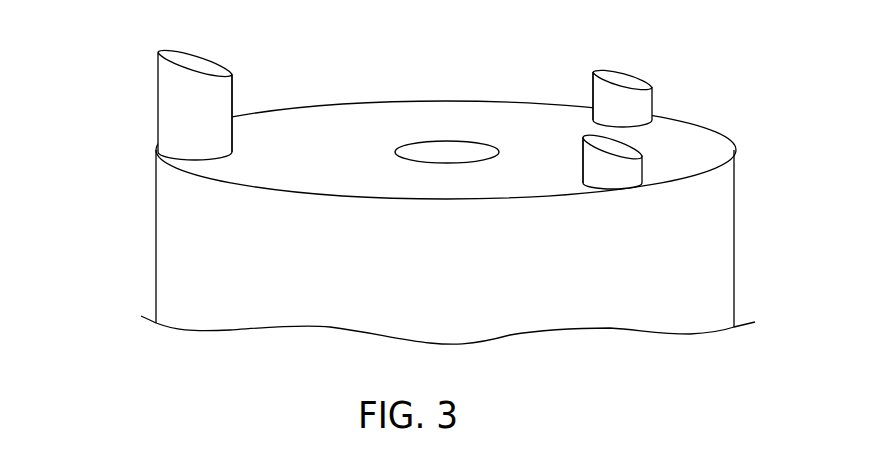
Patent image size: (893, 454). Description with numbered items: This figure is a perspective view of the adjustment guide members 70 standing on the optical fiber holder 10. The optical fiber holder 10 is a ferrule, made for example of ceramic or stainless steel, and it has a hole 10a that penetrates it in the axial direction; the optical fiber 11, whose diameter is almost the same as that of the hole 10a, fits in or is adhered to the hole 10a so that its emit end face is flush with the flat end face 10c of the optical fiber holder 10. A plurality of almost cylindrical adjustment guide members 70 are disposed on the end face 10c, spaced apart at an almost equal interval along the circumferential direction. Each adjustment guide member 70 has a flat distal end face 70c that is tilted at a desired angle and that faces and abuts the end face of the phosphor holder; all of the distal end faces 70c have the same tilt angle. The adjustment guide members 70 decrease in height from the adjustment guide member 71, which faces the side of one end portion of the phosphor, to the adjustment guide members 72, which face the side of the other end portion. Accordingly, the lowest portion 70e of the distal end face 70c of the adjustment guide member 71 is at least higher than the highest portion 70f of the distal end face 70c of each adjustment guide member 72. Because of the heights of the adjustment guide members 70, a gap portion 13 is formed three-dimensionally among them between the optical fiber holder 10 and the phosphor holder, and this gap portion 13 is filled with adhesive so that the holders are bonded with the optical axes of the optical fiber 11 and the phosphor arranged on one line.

The optical fiber holder 10 is at (436, 196).
The hole 10a is at (463, 165).
The end face 10c is at (415, 180).
The optical fiber 11 is at (420, 152).
The gap portion 13 is at (340, 123).
The adjustment guide members 70 is at (409, 133).
The adjustment guide member 71 is at (182, 106).
The adjustment guide members 72 is at (636, 148).
The distal end face 70c is at (177, 57).
The lowest portion 70e is at (232, 75).
The highest portion 70f is at (593, 72).